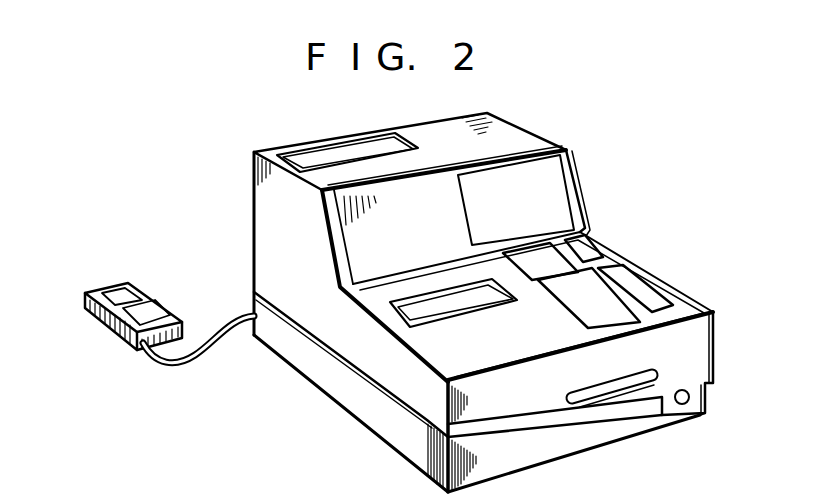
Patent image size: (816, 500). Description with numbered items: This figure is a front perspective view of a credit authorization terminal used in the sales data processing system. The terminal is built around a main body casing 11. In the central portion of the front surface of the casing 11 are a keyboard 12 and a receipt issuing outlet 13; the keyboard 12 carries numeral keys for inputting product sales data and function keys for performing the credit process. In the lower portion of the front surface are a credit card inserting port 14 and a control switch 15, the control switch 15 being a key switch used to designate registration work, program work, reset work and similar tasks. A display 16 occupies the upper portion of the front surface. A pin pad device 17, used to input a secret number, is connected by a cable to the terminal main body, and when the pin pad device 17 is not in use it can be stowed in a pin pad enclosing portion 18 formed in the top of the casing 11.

The main body casing 11 is at (598, 222).
The keyboard 12 is at (578, 302).
The receipt issuing outlet 13 is at (449, 307).
The credit card inserting port 14 is at (597, 393).
The control switch 15 is at (688, 406).
The display 16 is at (555, 182).
The pin pad device 17 is at (152, 297).
The pin pad enclosing portion 18 is at (318, 158).